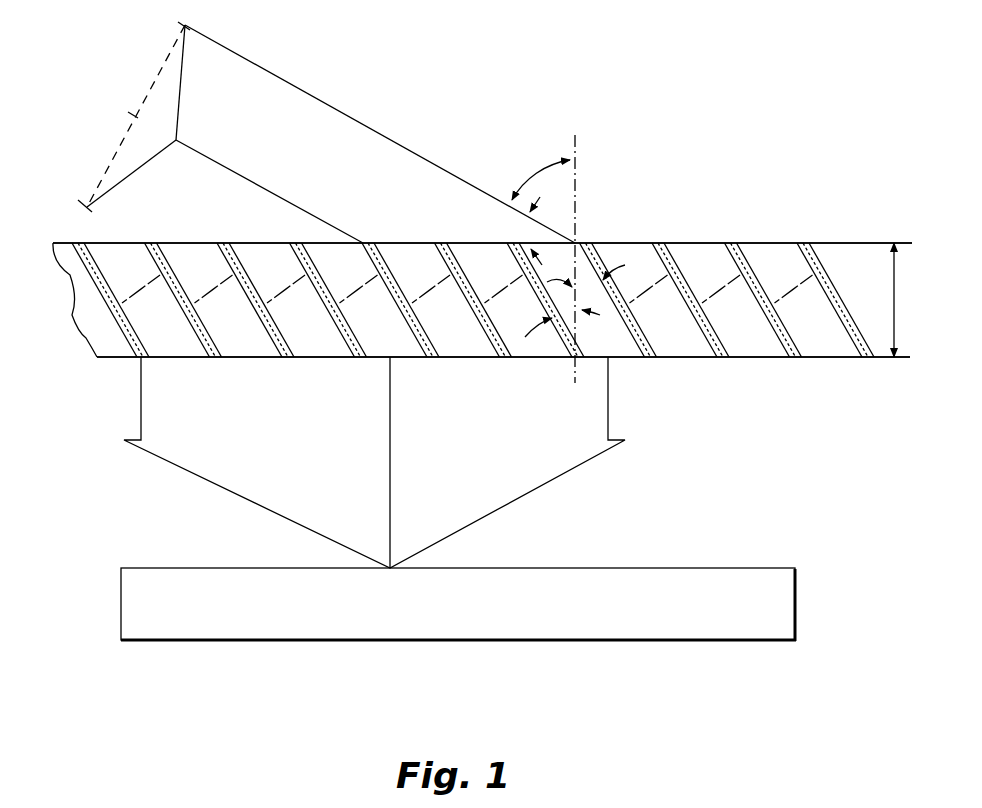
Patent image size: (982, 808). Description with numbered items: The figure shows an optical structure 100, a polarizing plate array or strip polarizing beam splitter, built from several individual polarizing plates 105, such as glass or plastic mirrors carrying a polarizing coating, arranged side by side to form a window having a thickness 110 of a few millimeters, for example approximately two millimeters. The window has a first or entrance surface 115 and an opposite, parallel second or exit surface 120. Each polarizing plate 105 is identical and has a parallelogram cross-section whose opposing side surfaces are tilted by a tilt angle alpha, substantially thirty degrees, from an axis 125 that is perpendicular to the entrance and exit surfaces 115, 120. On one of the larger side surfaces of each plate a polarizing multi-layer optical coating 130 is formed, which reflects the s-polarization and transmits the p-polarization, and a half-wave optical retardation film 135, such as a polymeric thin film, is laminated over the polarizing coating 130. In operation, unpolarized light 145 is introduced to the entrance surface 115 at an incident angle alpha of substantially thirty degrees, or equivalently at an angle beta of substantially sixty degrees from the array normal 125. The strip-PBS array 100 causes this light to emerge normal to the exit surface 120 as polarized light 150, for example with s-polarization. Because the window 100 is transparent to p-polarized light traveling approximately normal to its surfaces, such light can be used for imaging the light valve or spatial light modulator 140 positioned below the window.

The optical structure 100 is at (688, 160).
The polarizing plates 105 is at (665, 320).
The thickness 110 is at (893, 302).
The entrance surface 115 is at (682, 243).
The exit surface 120 is at (765, 357).
The axis 125 is at (575, 147).
The polarizing multi-layer optical coating 130 is at (808, 257).
The half-wave optical retardation film 135 is at (812, 243).
The SLM 140 is at (516, 653).
The unpolarized light 145 is at (315, 90).
The polarized light 150 is at (198, 482).